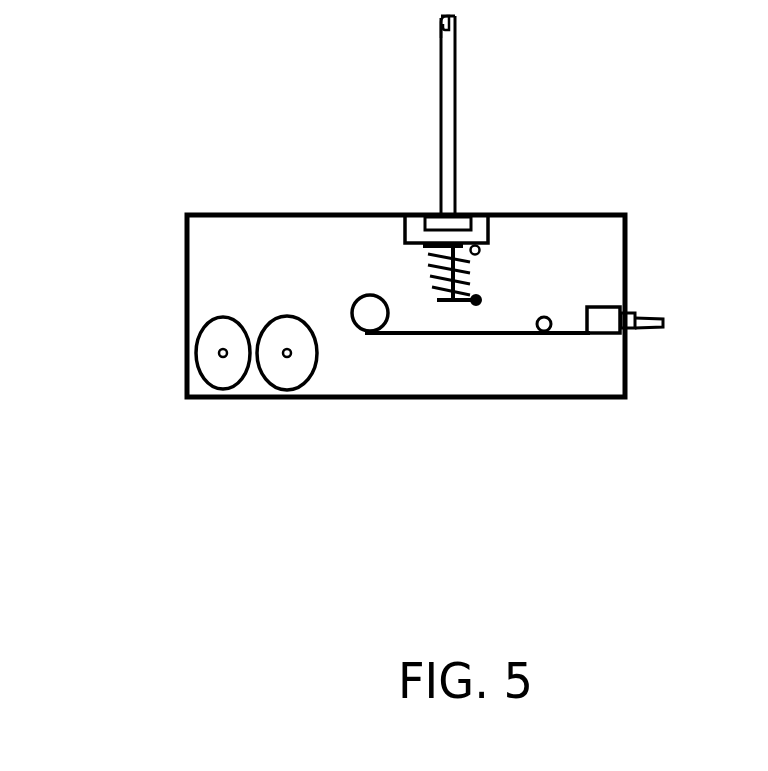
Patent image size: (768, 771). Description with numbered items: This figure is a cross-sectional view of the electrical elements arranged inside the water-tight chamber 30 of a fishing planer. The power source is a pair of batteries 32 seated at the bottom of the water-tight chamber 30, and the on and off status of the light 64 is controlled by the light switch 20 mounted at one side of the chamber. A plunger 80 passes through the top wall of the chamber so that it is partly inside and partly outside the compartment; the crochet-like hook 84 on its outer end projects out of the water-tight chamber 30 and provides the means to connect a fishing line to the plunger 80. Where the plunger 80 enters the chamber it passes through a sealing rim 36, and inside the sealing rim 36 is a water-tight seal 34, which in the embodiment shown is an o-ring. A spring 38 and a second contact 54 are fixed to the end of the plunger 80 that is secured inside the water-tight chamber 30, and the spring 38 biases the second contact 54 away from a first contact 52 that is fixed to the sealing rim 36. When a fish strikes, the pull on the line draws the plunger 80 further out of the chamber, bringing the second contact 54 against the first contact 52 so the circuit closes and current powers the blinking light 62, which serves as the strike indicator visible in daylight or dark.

The light switch 20 is at (657, 327).
The water-tight chamber 30 is at (272, 213).
The batteries 32 is at (193, 354).
The water-tight seal 34 is at (462, 213).
The sealing rim 36 is at (405, 213).
The spring 38 is at (435, 264).
The first contact 52 is at (482, 247).
The second contact 54 is at (478, 303).
The blinking light 62 is at (365, 333).
The light 64 is at (547, 333).
The plunger 80 is at (457, 76).
The crochet-like hook 84 is at (438, 33).